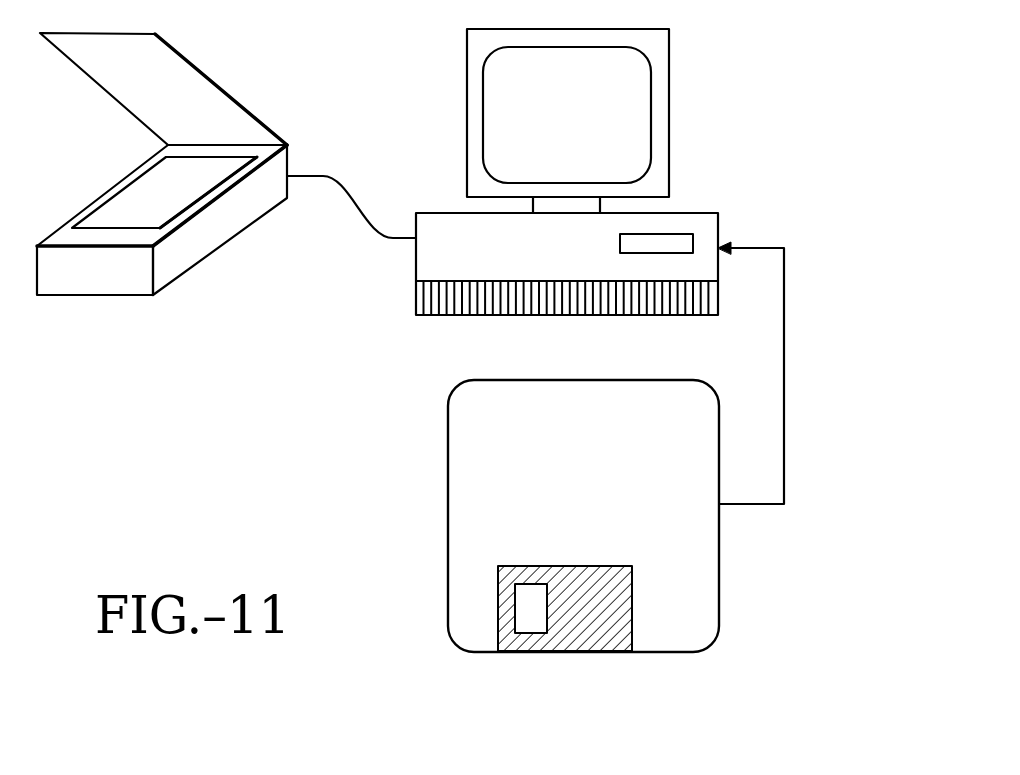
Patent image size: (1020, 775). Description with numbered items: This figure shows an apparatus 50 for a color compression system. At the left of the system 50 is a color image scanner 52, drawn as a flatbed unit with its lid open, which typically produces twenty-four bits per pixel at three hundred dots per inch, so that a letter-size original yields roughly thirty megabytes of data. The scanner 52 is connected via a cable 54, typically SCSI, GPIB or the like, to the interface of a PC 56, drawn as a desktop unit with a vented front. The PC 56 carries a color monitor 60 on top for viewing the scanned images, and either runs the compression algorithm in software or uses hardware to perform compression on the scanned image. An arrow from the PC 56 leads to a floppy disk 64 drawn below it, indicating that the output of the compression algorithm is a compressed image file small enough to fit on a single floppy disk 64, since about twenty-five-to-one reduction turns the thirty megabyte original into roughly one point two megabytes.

The apparatus 50 is at (350, 57).
The color image scanner 52 is at (213, 253).
The cable 54 is at (347, 192).
The PC 56 is at (700, 217).
The color monitor 60 is at (669, 82).
The floppy disk 64 is at (700, 652).